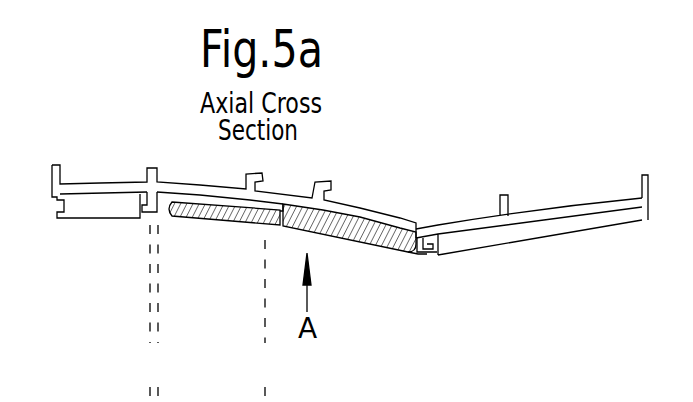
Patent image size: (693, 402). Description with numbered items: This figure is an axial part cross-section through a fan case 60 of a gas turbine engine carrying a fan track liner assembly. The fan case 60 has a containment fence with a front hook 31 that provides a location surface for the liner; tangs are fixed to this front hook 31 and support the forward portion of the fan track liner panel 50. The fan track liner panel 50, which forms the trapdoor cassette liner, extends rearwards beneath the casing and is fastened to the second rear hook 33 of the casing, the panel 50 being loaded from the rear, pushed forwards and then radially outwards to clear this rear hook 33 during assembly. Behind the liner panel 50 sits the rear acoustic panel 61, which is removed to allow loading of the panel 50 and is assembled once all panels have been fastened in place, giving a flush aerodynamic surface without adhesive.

The front hook 31 is at (137, 200).
The second rear hook 33 is at (416, 234).
The fan track liner panel 50 is at (362, 228).
The fan case 60 is at (571, 207).
The rear acoustic panel 61 is at (637, 217).